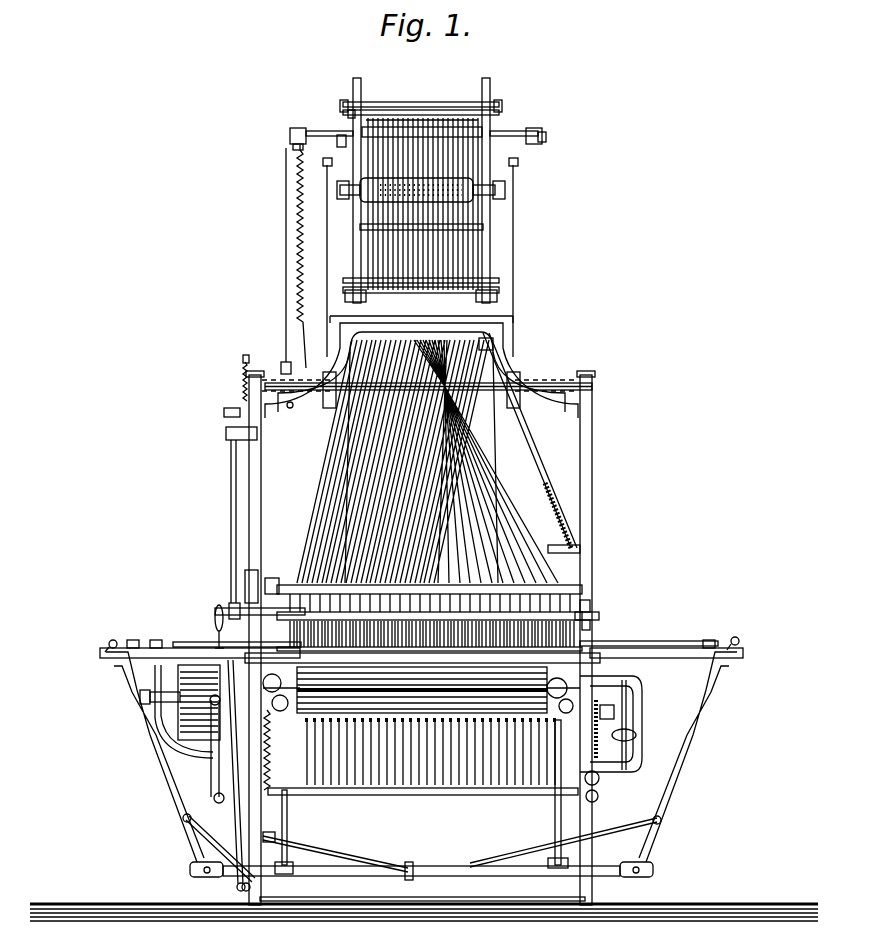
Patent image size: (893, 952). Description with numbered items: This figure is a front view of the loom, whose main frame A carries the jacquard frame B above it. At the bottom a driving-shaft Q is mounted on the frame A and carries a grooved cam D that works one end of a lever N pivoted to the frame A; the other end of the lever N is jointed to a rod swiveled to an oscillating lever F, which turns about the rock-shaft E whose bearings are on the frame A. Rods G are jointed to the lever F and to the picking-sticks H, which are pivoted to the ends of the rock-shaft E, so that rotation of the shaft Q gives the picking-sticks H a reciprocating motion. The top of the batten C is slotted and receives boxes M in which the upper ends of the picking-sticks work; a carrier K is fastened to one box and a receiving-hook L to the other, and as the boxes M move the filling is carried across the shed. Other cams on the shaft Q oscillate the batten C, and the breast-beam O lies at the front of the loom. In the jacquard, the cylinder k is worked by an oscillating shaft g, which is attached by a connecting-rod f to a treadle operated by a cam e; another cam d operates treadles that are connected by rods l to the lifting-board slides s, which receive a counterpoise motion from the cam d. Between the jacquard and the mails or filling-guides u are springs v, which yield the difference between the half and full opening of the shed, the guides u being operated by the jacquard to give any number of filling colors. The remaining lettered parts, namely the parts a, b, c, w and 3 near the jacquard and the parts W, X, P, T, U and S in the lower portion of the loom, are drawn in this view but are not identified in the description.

The frame of the loom A is at (428, 638).
The frame of the jacquard B is at (420, 190).
The lifting-board slide s is at (422, 204).
The cylinder k is at (421, 193).
The oscillating shaft g is at (418, 140).
The connecting-rod f is at (286, 256).
The rods l is at (418, 257).
The cord w is at (293, 312).
The lever b is at (240, 397).
The cross rod c is at (427, 375).
The cam d is at (418, 404).
The cam e is at (290, 419).
The vertical rod a is at (229, 665).
The springs v is at (567, 508).
The mails or guides u is at (583, 618).
The hand lever 3 is at (211, 620).
The boxes M is at (422, 633).
The receiving-hook L is at (237, 637).
The batten C is at (422, 658).
The carrier K is at (649, 637).
The driving-shaft Q is at (150, 697).
The cloth roller W is at (422, 681).
The breast-beam O is at (422, 679).
The bracket X is at (622, 724).
The grooved cam D is at (202, 711).
The picking-sticks H is at (421, 764).
The lever N is at (220, 793).
The upright rod P is at (421, 797).
The rods G is at (460, 845).
The gear T is at (600, 786).
The pinion U is at (583, 800).
The needle bar S is at (423, 772).
The oscillating lever F is at (421, 883).
The rock-shaft E is at (422, 892).